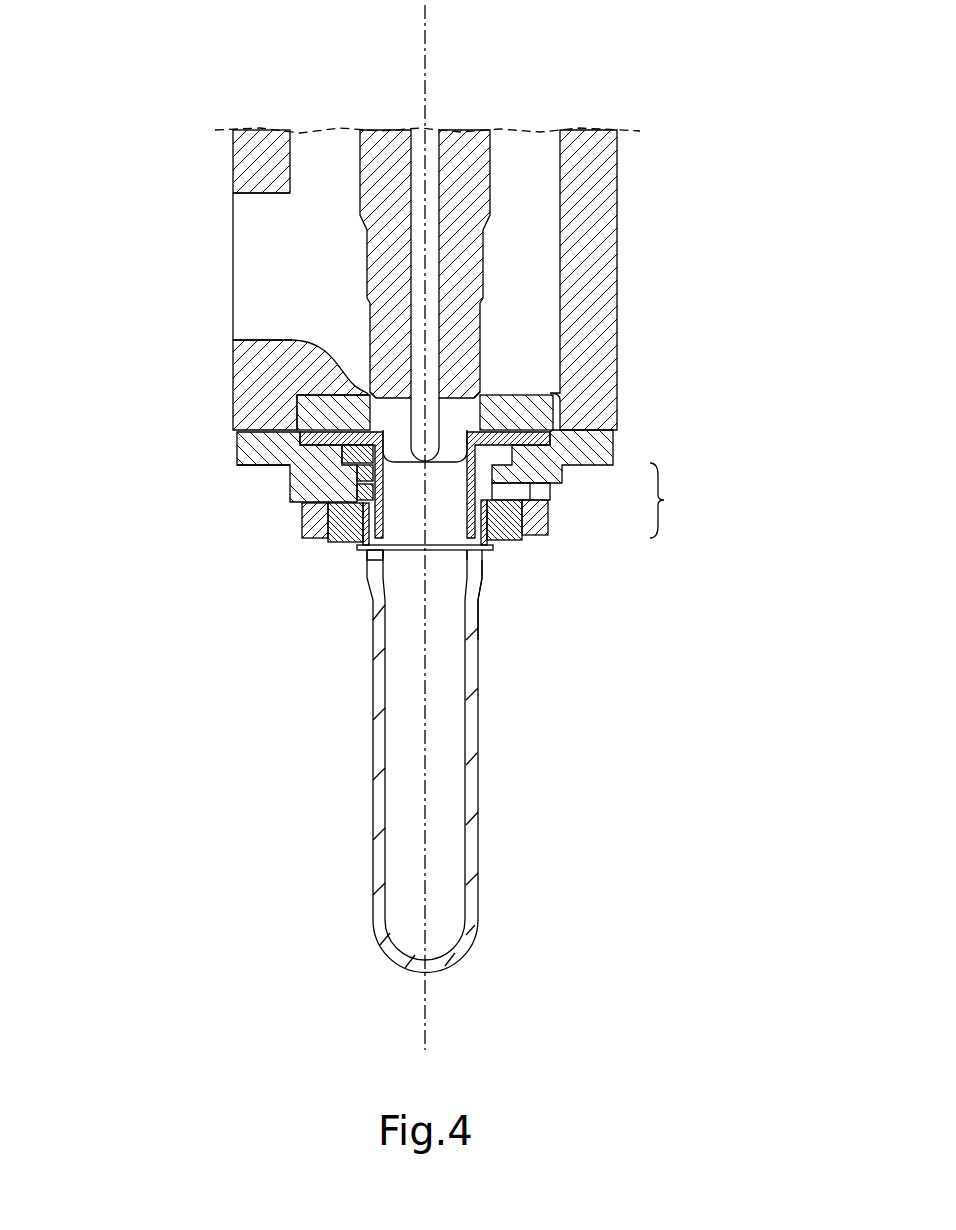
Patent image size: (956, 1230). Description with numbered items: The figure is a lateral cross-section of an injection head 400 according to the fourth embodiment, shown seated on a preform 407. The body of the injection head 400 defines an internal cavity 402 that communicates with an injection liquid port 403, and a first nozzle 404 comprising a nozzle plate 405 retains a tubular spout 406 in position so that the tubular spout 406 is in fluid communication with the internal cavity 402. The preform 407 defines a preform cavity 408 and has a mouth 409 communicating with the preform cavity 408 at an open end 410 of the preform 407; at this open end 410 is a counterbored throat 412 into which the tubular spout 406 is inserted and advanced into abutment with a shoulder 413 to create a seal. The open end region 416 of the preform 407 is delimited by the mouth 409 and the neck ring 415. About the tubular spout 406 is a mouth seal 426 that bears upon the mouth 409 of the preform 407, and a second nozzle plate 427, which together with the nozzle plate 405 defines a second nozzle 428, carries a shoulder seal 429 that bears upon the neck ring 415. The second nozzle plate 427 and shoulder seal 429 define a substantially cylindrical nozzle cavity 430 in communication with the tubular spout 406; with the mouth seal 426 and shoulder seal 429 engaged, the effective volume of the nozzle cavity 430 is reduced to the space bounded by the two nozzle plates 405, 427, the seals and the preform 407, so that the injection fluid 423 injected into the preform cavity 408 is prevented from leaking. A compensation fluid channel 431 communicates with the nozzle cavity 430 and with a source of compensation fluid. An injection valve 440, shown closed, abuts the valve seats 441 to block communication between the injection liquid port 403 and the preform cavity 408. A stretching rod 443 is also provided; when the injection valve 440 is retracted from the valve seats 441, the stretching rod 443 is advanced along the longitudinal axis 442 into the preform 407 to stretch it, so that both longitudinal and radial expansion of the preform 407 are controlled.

The injection head 400 is at (688, 213).
The internal cavity 402 is at (527, 134).
The injection liquid port 403 is at (240, 240).
The first nozzle 404 is at (237, 462).
The nozzle plate 405 is at (237, 432).
The tubular spout 406 is at (483, 583).
The preform 407 is at (483, 822).
The preform cavity 408 is at (448, 762).
The mouth 409 is at (368, 482).
The open end 410 is at (160, 548).
The counterbored throat 412 is at (412, 550).
The shoulder 413 is at (382, 562).
The neck ring 415 is at (493, 548).
The open end region 416 is at (683, 500).
The injection fluid 423 is at (320, 285).
The mouth seal 426 is at (538, 452).
The second nozzle plate 427 is at (295, 530).
The second nozzle 428 is at (352, 560).
The shoulder seal 429 is at (355, 543).
The nozzle cavity 430 is at (368, 494).
The compensation fluid channel 431 is at (545, 489).
The injection valve 440 is at (463, 132).
The valve seats 441 is at (372, 393).
The longitudinal axis 442 is at (425, 40).
The stretching rod 443 is at (414, 132).